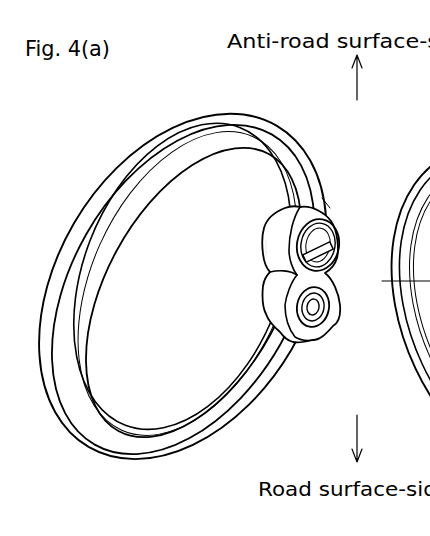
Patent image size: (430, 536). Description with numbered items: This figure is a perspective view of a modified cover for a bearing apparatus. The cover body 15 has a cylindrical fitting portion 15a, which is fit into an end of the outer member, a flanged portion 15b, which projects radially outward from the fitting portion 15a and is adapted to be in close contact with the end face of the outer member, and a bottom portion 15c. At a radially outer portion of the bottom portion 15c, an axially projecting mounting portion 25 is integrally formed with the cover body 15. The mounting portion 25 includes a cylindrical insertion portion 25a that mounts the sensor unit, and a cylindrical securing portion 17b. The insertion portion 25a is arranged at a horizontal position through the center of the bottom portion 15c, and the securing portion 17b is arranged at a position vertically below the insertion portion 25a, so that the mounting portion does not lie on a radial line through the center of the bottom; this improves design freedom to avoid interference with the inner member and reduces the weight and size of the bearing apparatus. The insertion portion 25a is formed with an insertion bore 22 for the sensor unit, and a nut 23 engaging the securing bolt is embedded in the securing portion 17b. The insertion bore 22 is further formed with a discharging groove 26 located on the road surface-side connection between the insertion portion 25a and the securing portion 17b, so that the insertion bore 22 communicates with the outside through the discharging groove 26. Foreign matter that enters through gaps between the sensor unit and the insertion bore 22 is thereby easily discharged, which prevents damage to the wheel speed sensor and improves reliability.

The cover body 15 is at (212, 104).
The fitting portion 15a is at (158, 142).
The flanged portion 15b is at (242, 114).
The bottom portion 15c is at (181, 398).
The securing portion 17b is at (266, 307).
The insertion bore 22 is at (298, 229).
The nut 23 is at (306, 331).
The mounting portion 25 is at (338, 210).
The insertion portion 25a is at (276, 240).
The discharging groove 26 is at (330, 248).